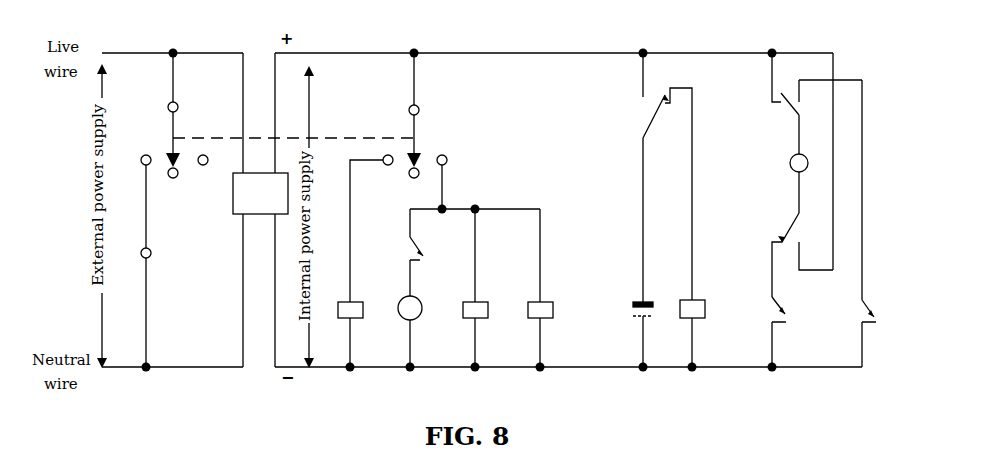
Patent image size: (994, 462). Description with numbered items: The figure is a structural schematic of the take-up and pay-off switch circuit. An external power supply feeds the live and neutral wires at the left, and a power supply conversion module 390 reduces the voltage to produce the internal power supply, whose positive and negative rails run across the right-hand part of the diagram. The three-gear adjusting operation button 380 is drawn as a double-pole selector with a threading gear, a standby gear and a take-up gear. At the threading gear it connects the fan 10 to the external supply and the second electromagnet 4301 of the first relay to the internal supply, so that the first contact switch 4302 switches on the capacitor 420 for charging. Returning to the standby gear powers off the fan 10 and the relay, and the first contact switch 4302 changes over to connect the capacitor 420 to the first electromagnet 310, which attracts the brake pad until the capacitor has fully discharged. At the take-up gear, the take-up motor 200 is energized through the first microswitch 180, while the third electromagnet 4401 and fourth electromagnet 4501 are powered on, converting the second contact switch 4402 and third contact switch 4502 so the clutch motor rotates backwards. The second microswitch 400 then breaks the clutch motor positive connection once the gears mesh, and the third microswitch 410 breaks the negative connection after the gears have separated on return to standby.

The fan 10 is at (137, 266).
The three-gear adjusting operation button 380 is at (294, 115).
The power supply conversion module 390 is at (260, 210).
The first microswitch 180 is at (401, 252).
The take-up motor 200 is at (396, 325).
The second electromagnet 4301 is at (343, 263).
The third electromagnet 4401 is at (458, 288).
The fourth electromagnet 4501 is at (523, 288).
The first contact switch 4302 is at (651, 177).
The second contact switch 4402 is at (799, 161).
The third contact switch 4502 is at (772, 234).
The capacitor 420 is at (629, 329).
The first electromagnet 310 is at (707, 329).
The third microswitch 410 is at (793, 332).
The second microswitch 400 is at (888, 223).